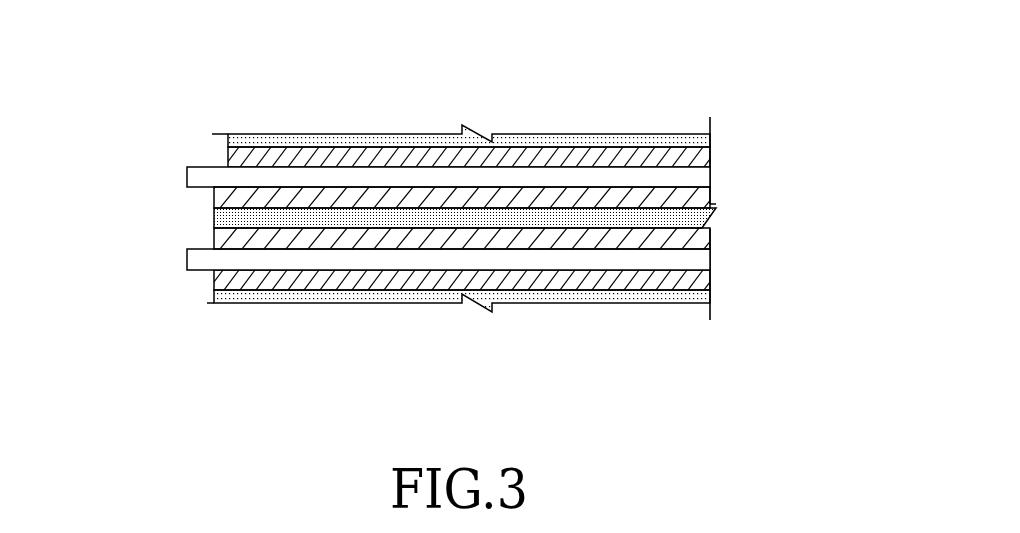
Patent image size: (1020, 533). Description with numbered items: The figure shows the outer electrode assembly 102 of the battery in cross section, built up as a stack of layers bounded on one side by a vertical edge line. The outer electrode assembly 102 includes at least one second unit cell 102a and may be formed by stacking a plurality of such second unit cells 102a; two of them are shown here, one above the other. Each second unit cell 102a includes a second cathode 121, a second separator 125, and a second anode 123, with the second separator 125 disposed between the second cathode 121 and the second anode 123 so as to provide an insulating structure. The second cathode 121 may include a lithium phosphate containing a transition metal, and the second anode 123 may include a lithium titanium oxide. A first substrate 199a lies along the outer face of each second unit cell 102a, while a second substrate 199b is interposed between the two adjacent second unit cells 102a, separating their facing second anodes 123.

The outer electrode assembly 102 is at (686, 89).
The second unit cell 102a is at (110, 130).
The second cathode 121 is at (228, 157).
The second anode 123 is at (214, 197).
The second separator 125 is at (187, 177).
The first substrate 199a is at (592, 136).
The second substrate 199b is at (695, 220).